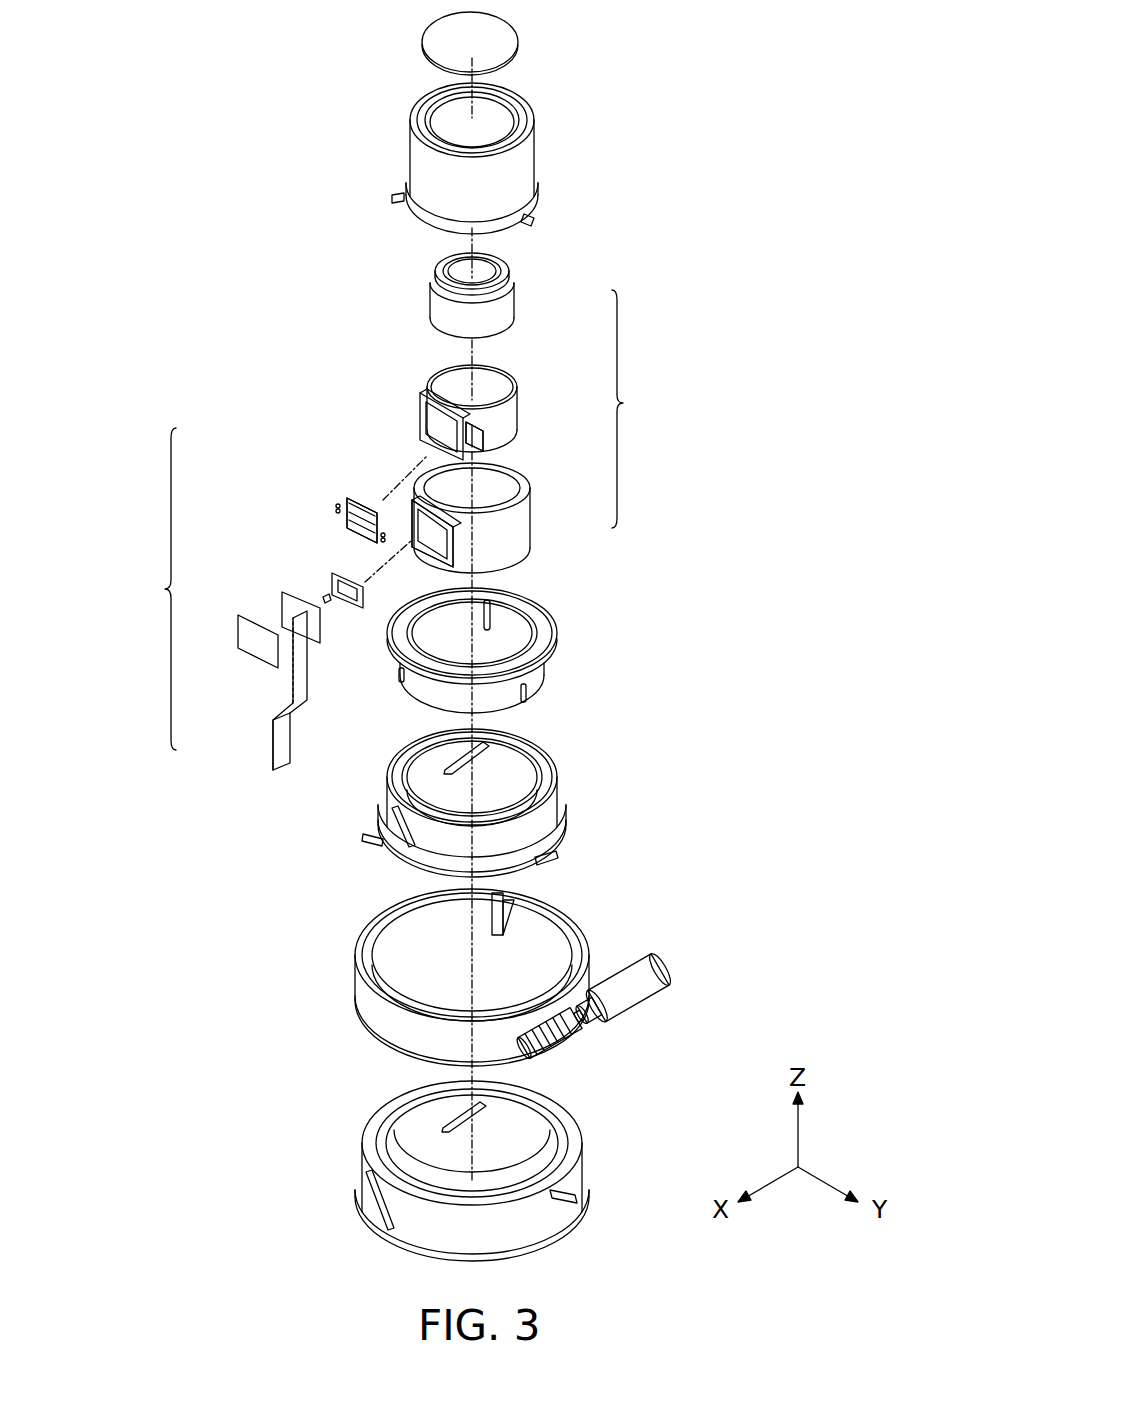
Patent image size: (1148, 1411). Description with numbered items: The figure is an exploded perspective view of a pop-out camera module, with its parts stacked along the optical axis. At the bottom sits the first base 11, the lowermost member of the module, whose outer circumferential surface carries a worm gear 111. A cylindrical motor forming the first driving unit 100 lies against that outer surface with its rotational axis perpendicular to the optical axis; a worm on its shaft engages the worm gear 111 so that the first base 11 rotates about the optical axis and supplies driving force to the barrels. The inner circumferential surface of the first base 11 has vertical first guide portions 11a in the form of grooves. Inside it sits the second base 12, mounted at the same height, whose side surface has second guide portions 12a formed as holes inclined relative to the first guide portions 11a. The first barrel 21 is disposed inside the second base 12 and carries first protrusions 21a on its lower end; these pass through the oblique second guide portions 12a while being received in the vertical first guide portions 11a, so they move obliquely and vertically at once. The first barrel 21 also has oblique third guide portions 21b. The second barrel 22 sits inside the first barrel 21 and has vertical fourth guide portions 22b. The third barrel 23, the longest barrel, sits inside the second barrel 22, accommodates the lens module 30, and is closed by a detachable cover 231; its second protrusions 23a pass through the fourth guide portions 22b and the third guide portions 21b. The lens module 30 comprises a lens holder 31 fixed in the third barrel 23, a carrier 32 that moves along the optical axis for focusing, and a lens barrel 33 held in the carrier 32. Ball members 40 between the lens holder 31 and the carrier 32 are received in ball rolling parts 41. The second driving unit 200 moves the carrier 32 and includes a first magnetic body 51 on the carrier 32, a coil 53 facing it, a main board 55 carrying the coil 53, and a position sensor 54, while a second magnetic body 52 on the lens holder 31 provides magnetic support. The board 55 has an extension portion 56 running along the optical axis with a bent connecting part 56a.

The detachable cover 231 is at (520, 47).
The third barrel 23 is at (520, 132).
The second protrusion 23a is at (536, 222).
The lens barrel 33 is at (514, 300).
The carrier 32 is at (517, 402).
The lens module 30 is at (636, 409).
The lens holder 31 is at (530, 523).
The ball rolling part 41 is at (478, 447).
The ball member 40 is at (385, 530).
The second barrel 22 is at (555, 628).
The fourth guide portion 22b is at (470, 632).
The first barrel 21 is at (552, 764).
The first protrusion 21a is at (558, 860).
The third guide portion 21b is at (378, 843).
The first base 11 is at (587, 945).
The first guide portion 11a is at (503, 912).
The first driving unit 100 is at (640, 985).
The worm gear 111 is at (560, 1052).
The second base 12 is at (583, 1150).
The second guide portion 12a is at (450, 1122).
The second driving unit 200 is at (144, 589).
The first magnetic body 51 is at (346, 530).
The second magnetic body 52 is at (243, 628).
The coil 53 is at (350, 598).
The position sensor 54 is at (328, 604).
The main board 55 is at (290, 602).
The extension portion 56 is at (305, 720).
The connecting part 56a is at (283, 710).